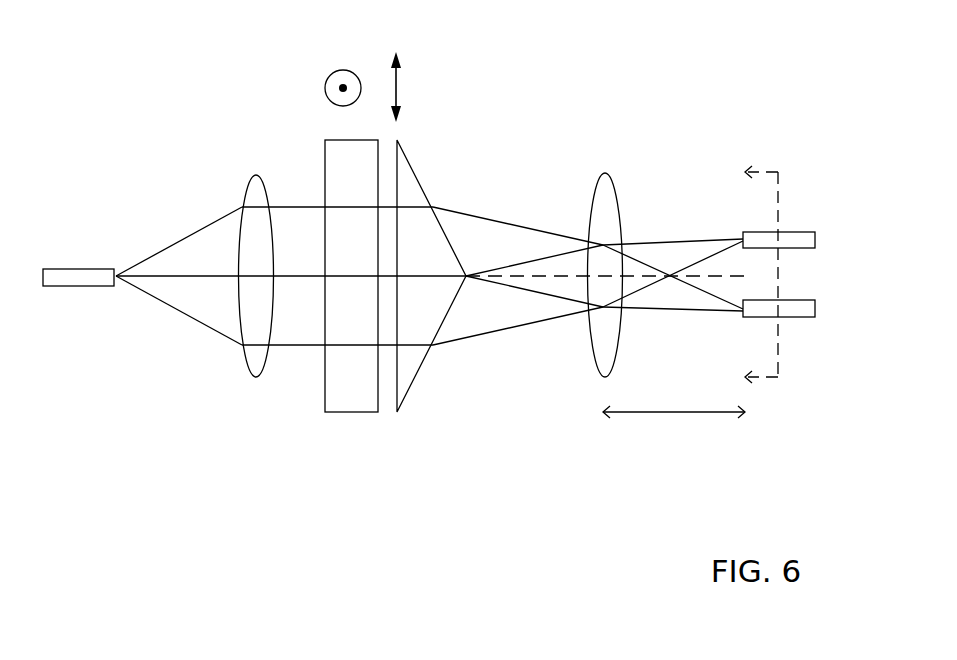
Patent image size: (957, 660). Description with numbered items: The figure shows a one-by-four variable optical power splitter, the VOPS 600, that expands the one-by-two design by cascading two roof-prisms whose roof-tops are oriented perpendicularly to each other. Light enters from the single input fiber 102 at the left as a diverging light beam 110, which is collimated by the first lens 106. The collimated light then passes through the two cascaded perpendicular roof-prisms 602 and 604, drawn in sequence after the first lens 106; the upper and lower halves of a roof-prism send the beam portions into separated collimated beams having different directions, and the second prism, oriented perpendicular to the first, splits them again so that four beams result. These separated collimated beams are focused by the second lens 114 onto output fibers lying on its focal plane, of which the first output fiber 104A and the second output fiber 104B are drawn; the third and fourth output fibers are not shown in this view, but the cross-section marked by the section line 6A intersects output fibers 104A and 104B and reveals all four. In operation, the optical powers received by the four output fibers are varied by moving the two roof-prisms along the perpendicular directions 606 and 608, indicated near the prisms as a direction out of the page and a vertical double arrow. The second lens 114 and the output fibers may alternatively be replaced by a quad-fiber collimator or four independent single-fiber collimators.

The 1×4 VOPS 600 is at (209, 100).
The input fiber 102 is at (67, 268).
The diverging light beam 110 is at (215, 222).
The first lens 106 is at (257, 174).
The first roof-prism 602 is at (323, 398).
The first moving direction 606 is at (330, 73).
The second moving direction 608 is at (399, 93).
The second roof-prism 604 is at (428, 197).
The second lens 114 is at (605, 173).
The first output fiber 104A is at (797, 230).
The second output fiber 104B is at (797, 317).
The cross-section line 6A is at (742, 275).